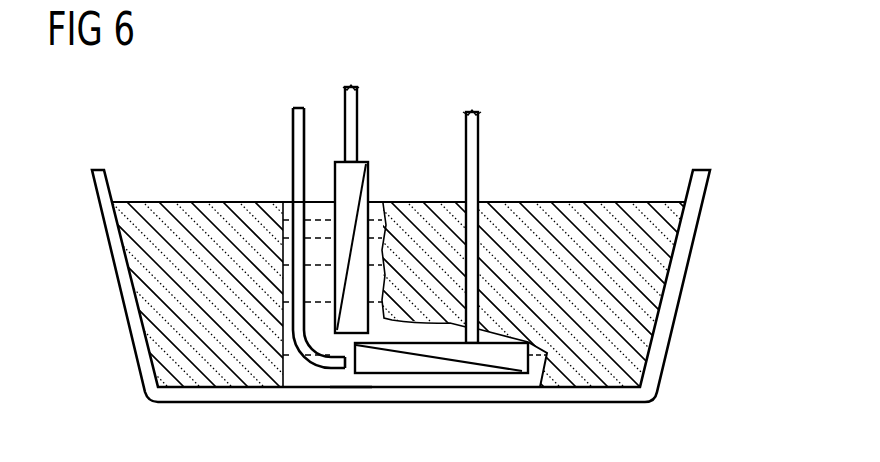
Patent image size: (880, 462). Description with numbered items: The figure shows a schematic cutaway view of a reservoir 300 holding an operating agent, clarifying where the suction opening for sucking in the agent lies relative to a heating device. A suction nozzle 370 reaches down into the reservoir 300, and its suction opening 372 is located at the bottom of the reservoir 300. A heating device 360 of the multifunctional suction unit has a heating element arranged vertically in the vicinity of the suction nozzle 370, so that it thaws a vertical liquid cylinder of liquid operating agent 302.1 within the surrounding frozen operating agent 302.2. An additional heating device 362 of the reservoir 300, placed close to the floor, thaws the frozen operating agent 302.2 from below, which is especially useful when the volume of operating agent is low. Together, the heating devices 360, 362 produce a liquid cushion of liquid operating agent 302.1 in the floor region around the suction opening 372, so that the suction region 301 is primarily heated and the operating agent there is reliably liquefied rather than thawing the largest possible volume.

The reservoir 300 is at (116, 268).
The suction region 301 is at (349, 366).
The liquid operating agent 302.1 is at (522, 380).
The frozen operating agent 302.2 is at (650, 292).
The heating device 360 is at (368, 177).
The additional heating device 362 is at (465, 374).
The suction nozzle 370 is at (292, 125).
The suction opening 372 is at (346, 369).